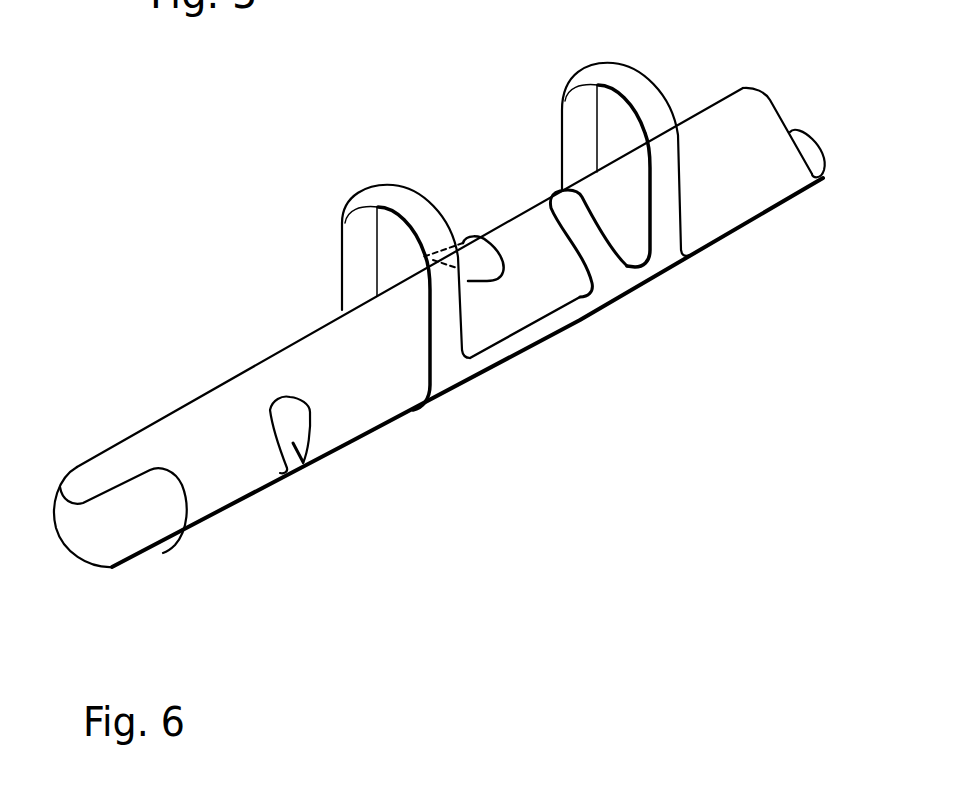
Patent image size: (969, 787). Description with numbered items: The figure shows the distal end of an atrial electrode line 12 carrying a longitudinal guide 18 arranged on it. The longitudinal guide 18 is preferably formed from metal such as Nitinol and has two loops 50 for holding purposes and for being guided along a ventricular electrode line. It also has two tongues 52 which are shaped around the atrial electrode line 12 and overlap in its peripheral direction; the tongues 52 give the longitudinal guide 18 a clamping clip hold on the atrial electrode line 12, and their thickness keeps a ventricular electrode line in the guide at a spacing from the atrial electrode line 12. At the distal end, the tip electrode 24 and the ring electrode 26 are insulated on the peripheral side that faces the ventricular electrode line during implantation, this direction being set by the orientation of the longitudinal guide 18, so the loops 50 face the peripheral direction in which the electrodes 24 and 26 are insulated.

The atrial electrode line 12 is at (203, 384).
The longitudinal guide 18 is at (433, 200).
The tip electrode 24 is at (140, 525).
The ring electrode 26 is at (305, 462).
The loops 50 is at (383, 190).
The tongues 52 is at (603, 253).